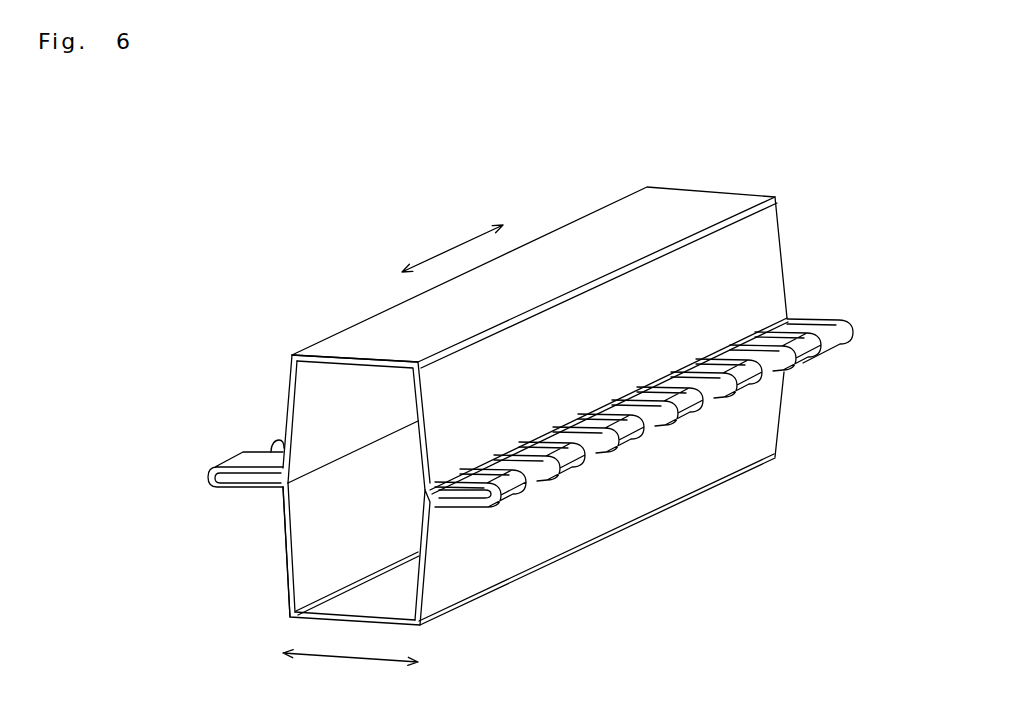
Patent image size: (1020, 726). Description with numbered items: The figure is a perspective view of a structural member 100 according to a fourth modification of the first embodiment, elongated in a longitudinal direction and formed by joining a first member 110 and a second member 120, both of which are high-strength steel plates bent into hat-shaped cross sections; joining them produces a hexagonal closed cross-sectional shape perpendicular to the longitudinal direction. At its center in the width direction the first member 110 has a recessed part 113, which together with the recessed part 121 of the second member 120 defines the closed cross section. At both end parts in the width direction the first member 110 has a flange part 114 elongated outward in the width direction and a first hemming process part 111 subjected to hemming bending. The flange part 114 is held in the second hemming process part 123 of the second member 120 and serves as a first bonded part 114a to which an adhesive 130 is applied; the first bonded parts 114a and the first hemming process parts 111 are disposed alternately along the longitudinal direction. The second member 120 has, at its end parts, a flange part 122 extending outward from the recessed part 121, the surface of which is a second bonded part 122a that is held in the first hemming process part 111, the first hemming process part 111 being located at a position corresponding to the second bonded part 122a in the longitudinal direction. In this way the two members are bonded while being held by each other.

The structural member 100 is at (487, 405).
The first member 110 is at (280, 619).
The first hemming process part 111 is at (497, 444).
The recessed part 113 is at (288, 586).
The flange part 114 is at (655, 444).
The first bonded part 114a is at (744, 464).
The second member 120 is at (351, 319).
The recessed part 121 is at (286, 408).
The flange part 122 is at (443, 472).
The second bonded part 122a is at (622, 596).
The second hemming process part 123 is at (595, 452).
The adhesive 130 is at (243, 490).